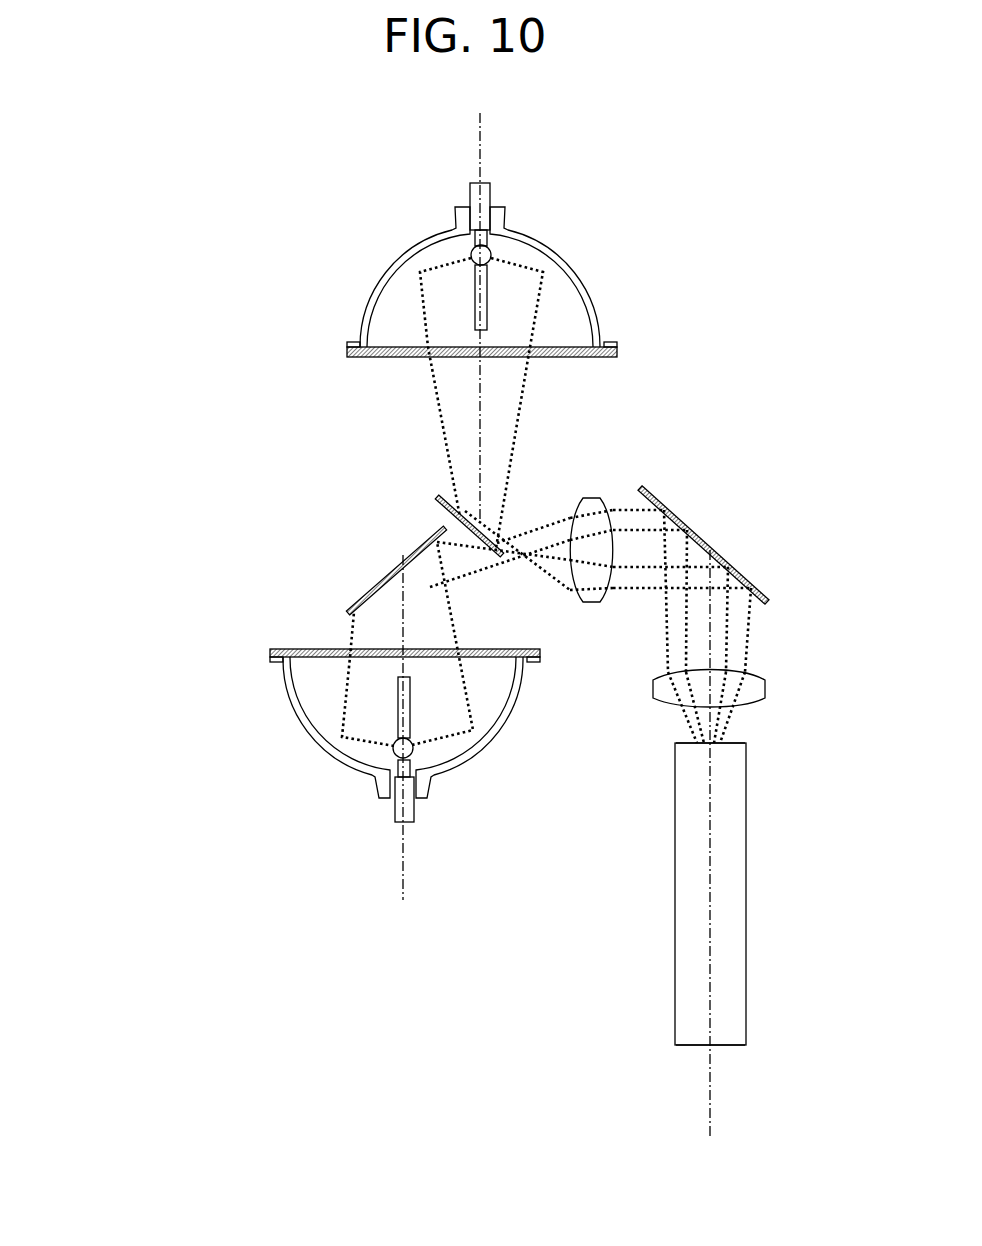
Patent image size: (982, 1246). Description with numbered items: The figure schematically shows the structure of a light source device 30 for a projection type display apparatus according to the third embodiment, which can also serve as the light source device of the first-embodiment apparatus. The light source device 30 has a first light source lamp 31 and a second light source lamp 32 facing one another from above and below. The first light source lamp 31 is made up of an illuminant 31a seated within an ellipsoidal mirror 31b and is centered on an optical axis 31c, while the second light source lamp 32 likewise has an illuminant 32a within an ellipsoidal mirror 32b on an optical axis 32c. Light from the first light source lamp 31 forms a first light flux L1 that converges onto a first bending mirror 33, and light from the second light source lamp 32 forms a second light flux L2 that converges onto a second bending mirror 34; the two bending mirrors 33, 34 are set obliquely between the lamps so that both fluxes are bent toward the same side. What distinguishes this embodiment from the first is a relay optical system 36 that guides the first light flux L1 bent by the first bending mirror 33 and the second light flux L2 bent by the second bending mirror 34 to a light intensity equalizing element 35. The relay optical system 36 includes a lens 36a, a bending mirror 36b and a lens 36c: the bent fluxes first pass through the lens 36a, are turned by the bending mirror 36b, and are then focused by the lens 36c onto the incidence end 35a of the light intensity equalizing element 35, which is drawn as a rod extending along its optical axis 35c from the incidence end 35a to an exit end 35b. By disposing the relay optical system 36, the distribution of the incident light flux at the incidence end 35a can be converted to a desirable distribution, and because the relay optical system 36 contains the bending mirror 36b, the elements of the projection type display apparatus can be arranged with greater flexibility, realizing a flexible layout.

The light source device 30 is at (98, 143).
The first light source lamp 31 is at (258, 320).
The illuminant 31a is at (470, 254).
The ellipsoidal mirror 31b is at (393, 289).
The optical axis 31c is at (481, 385).
The second light source lamp 32 is at (182, 697).
The illuminant 32a is at (393, 751).
The ellipsoidal mirror 32b is at (312, 716).
The optical axis 32c is at (405, 622).
The first bending mirror 33 is at (437, 525).
The second bending mirror 34 is at (385, 583).
The light intensity equalizing element 35 is at (676, 937).
The incidence end 35a is at (690, 743).
The exit end 35b is at (700, 1045).
The optical axis 35c is at (712, 1077).
The relay optical system 36 is at (882, 576).
The lens 36a is at (583, 498).
The bending mirror 36b is at (688, 527).
The lens 36c is at (755, 688).
The first light flux L1 is at (437, 395).
The second light flux L2 is at (352, 634).